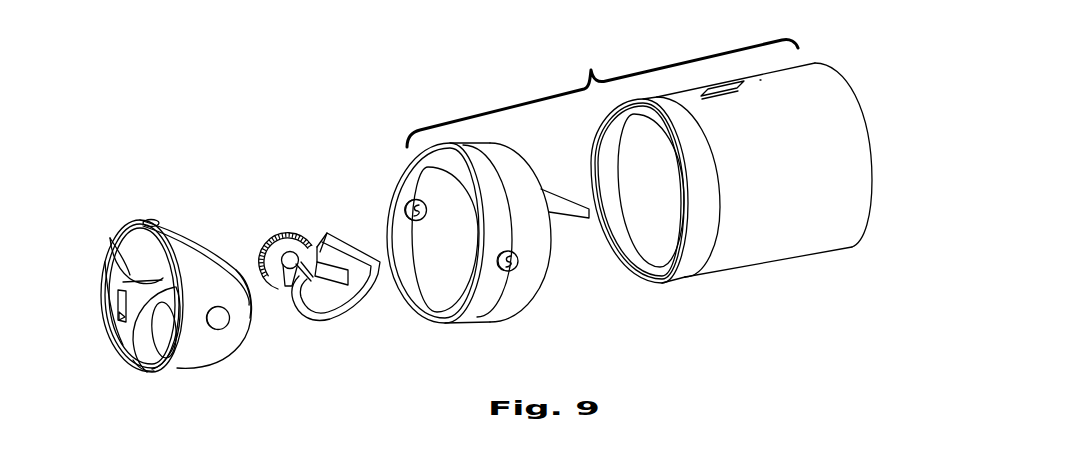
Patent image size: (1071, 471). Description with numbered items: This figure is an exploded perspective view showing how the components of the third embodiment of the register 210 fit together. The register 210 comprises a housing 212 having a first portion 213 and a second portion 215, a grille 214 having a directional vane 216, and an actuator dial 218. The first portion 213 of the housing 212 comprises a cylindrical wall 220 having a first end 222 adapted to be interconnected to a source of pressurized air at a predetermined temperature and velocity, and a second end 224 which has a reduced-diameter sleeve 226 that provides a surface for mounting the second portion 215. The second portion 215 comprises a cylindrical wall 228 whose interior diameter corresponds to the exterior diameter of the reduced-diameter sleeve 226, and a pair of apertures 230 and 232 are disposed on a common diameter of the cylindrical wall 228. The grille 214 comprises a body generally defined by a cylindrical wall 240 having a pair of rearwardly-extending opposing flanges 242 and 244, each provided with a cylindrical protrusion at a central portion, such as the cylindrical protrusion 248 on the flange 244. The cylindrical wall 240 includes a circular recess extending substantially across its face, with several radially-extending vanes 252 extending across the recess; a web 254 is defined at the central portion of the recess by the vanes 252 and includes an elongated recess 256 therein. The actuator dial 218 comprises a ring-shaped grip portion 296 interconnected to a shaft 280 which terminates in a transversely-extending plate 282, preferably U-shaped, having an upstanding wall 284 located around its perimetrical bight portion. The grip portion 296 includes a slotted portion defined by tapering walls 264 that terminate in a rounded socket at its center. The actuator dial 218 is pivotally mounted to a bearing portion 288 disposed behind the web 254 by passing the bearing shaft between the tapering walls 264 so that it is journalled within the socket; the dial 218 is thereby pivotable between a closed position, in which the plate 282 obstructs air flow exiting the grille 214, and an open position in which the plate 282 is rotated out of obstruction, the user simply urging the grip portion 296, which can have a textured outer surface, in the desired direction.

The register 210 is at (352, 91).
The housing 212 is at (602, 91).
The first portion 213 is at (807, 258).
The grille 214 is at (123, 216).
The second portion 215 is at (521, 314).
The directional vane 216 is at (150, 363).
The actuator dial 218 is at (313, 229).
The cylindrical wall 220 is at (847, 145).
The first end 222 is at (847, 90).
The second end 224 is at (713, 260).
The reduced-diameter sleeve 226 is at (688, 274).
The cylindrical wall 228 is at (523, 292).
The aperture 230 is at (407, 208).
The aperture 232 is at (520, 263).
The cylindrical wall 240 is at (207, 343).
The flange 242 is at (143, 257).
The flange 244 is at (238, 337).
The cylindrical protrusion 248 is at (215, 304).
The vanes 252 is at (158, 290).
The web 254 is at (120, 293).
The elongated recess 256 is at (122, 330).
The tapering walls 264 is at (310, 318).
The shaft 280 is at (332, 273).
The plate 282 is at (338, 297).
The upstanding wall 284 is at (367, 297).
The bearing portion 288 is at (165, 317).
The grip portion 296 is at (279, 232).